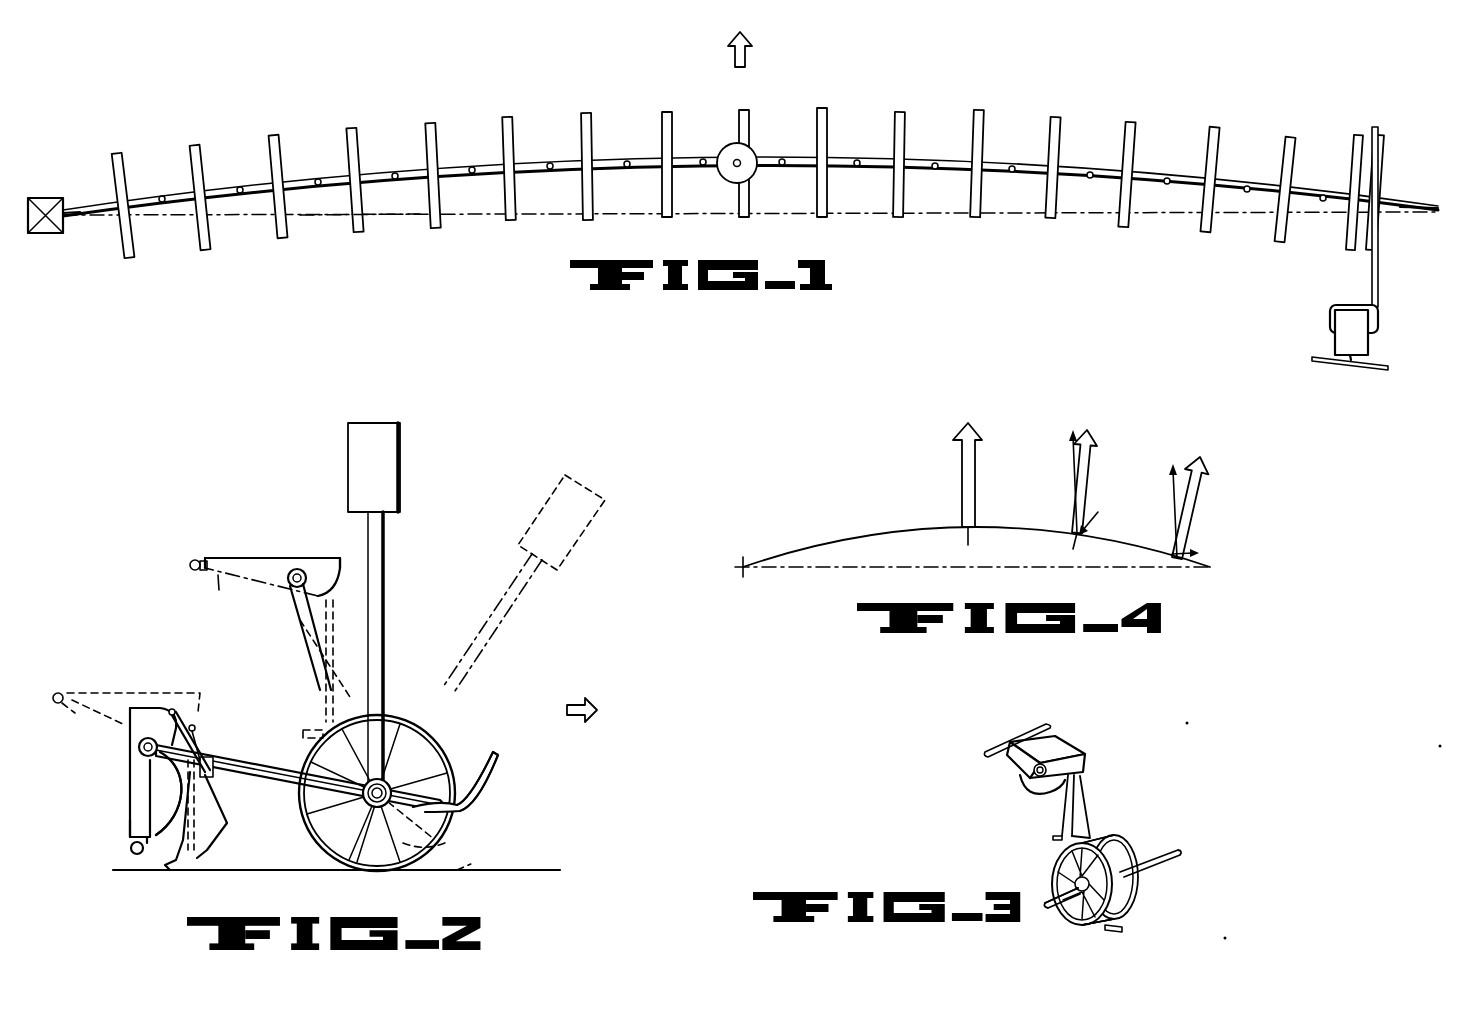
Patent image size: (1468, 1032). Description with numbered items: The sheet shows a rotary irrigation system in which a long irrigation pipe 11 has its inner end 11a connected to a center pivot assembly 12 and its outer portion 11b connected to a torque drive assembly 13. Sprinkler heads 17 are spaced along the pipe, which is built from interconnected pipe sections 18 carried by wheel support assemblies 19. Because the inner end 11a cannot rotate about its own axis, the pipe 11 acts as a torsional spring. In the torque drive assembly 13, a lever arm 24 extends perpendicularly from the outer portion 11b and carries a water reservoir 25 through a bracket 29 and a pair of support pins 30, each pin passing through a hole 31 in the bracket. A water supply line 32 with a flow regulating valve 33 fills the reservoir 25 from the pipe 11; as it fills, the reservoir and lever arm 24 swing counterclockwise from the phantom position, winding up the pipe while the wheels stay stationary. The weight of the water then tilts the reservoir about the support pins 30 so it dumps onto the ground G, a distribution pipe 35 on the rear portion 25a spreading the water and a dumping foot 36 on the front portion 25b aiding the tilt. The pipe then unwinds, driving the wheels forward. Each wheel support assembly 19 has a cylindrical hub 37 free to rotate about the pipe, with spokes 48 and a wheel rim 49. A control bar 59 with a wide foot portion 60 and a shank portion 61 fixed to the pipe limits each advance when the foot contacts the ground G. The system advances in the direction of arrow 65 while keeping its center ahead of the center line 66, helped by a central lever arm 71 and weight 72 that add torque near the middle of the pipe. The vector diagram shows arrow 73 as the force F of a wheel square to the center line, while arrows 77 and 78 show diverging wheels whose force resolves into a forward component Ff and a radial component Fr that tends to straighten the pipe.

In FIG. 1, the irrigation pipe 11 is at (614, 156).
In FIG. 2, the irrigation pipe 11 is at (403, 775).
In FIG. 3, the irrigation pipe 11 is at (1172, 840).
In FIG. 1, the inner end of irrigation pipe 11a is at (73, 222).
In FIG. 1, the outer portion of irrigation pipe 11b is at (1410, 205).
In FIG. 3, the outer portion of irrigation pipe 11b is at (1052, 890).
In FIG. 1, the center pivot assembly 12 is at (45, 196).
In FIG. 1, the torque drive assembly 13 is at (1342, 269).
In FIG. 2, the torque drive assembly 13 is at (176, 618).
In FIG. 3, the torque drive assembly 13 is at (1178, 760).
In FIG. 1, the sprinkler head 17 is at (318, 179).
In FIG. 1, the pipe section 18 is at (449, 169).
In FIG. 3, the pipe section 18 is at (1183, 857).
In FIG. 1, the wheel support assembly 19 is at (131, 249).
In FIG. 2, the wheel support assembly 19 is at (447, 728).
In FIG. 3, the wheel support assembly 19 is at (1158, 885).
In FIG. 1, the lever arm 24 is at (1376, 270).
In FIG. 2, the lever arm 24 is at (278, 758).
In FIG. 3, the lever arm 24 is at (1082, 806).
In FIG. 1, the water reservoir 25 is at (1340, 338).
In FIG. 2, the water reservoir 25 is at (276, 556).
In FIG. 3, the water reservoir 25 is at (1052, 742).
In FIG. 2, the rear portion of reservoir 25a is at (201, 556).
In FIG. 2, the front portion of reservoir 25b is at (341, 567).
In FIG. 2, the bracket 29 is at (131, 782).
In FIG. 3, the bracket 29 is at (1030, 786).
In FIG. 2, the support pin 30 is at (291, 587).
In FIG. 2, the hole 31 is at (134, 767).
In FIG. 2, the water supply line 32 is at (280, 789).
In FIG. 3, the water supply line 32 is at (1020, 765).
In FIG. 2, the flow regulating valve 33 is at (216, 770).
In FIG. 3, the flow regulating valve 33 is at (1058, 806).
In FIG. 1, the distribution pipe 35 is at (1318, 360).
In FIG. 2, the distribution pipe 35 is at (189, 565).
In FIG. 3, the distribution pipe 35 is at (1040, 723).
In FIG. 2, the dumping foot 36 is at (331, 610).
In FIG. 3, the dumping foot 36 is at (1081, 778).
In FIG. 2, the cylindrical hub 37 is at (363, 783).
In FIG. 2, the spokes 48 is at (322, 848).
In FIG. 3, the spokes 48 is at (1062, 860).
In FIG. 2, the wheel rim 49 is at (457, 750).
In FIG. 3, the wheel rim 49 is at (1126, 847).
In FIG. 2, the control bar 59 is at (466, 858).
In FIG. 3, the control bar 59 is at (1092, 926).
In FIG. 2, the foot portion 60 is at (484, 800).
In FIG. 3, the foot portion 60 is at (1125, 930).
In FIG. 2, the shank portion 61 is at (442, 836).
In FIG. 1, the arrow 65 is at (753, 55).
In FIG. 2, the arrow 65 is at (586, 700).
In FIG. 1, the center line 66 is at (334, 221).
In FIG. 2, the lever arm 71 is at (488, 618).
In FIG. 1, the weight 72 is at (753, 153).
In FIG. 2, the weight 72 is at (565, 478).
In FIG. 4, the arrow 73 is at (962, 483).
In FIG. 4, the arrow 77 is at (1087, 478).
In FIG. 4, the arrow 78 is at (1205, 487).
In FIG. 4, the force F is at (914, 499).
In FIG. 4, the forward component Ff is at (1070, 462).
In FIG. 4, the radial component Fr is at (1084, 531).
In FIG. 2, the ground G is at (116, 869).